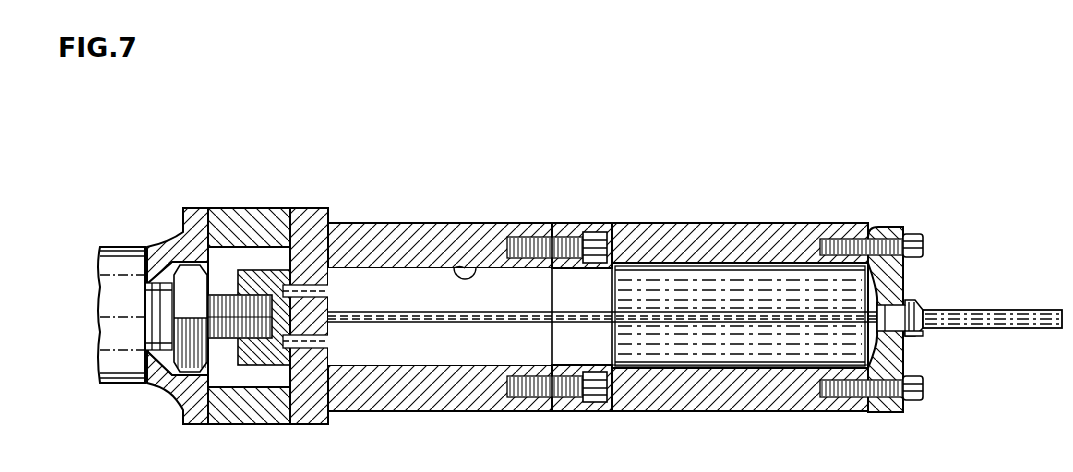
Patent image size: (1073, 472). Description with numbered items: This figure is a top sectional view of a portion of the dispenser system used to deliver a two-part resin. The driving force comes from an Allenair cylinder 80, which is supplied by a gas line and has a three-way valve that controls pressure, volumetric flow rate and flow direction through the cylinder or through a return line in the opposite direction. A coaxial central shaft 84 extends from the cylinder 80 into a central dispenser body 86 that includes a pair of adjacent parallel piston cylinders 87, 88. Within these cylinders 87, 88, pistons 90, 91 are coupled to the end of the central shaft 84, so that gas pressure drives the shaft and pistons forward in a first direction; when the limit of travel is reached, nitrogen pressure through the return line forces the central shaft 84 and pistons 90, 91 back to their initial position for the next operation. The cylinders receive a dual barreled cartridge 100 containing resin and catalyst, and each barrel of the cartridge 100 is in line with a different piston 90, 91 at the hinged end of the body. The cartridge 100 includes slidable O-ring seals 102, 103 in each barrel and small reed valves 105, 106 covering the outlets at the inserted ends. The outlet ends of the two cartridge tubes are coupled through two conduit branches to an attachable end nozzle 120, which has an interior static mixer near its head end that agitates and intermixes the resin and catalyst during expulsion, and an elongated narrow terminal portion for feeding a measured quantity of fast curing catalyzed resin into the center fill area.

The Allenair cylinder 80 is at (113, 246).
The coaxial central shaft 84 is at (227, 297).
The central dispenser body 86 is at (363, 223).
The piston cylinder 87 is at (477, 268).
The piston cylinder 88 is at (448, 364).
The piston 90 is at (419, 285).
The piston 91 is at (411, 343).
The dual barreled cartridge 100 is at (797, 298).
The slidable O-ring seal 102 is at (617, 297).
The slidable O-ring seal 103 is at (618, 347).
The reed valve 105 is at (917, 310).
The reed valve 106 is at (918, 333).
The end nozzle 120 is at (1025, 310).